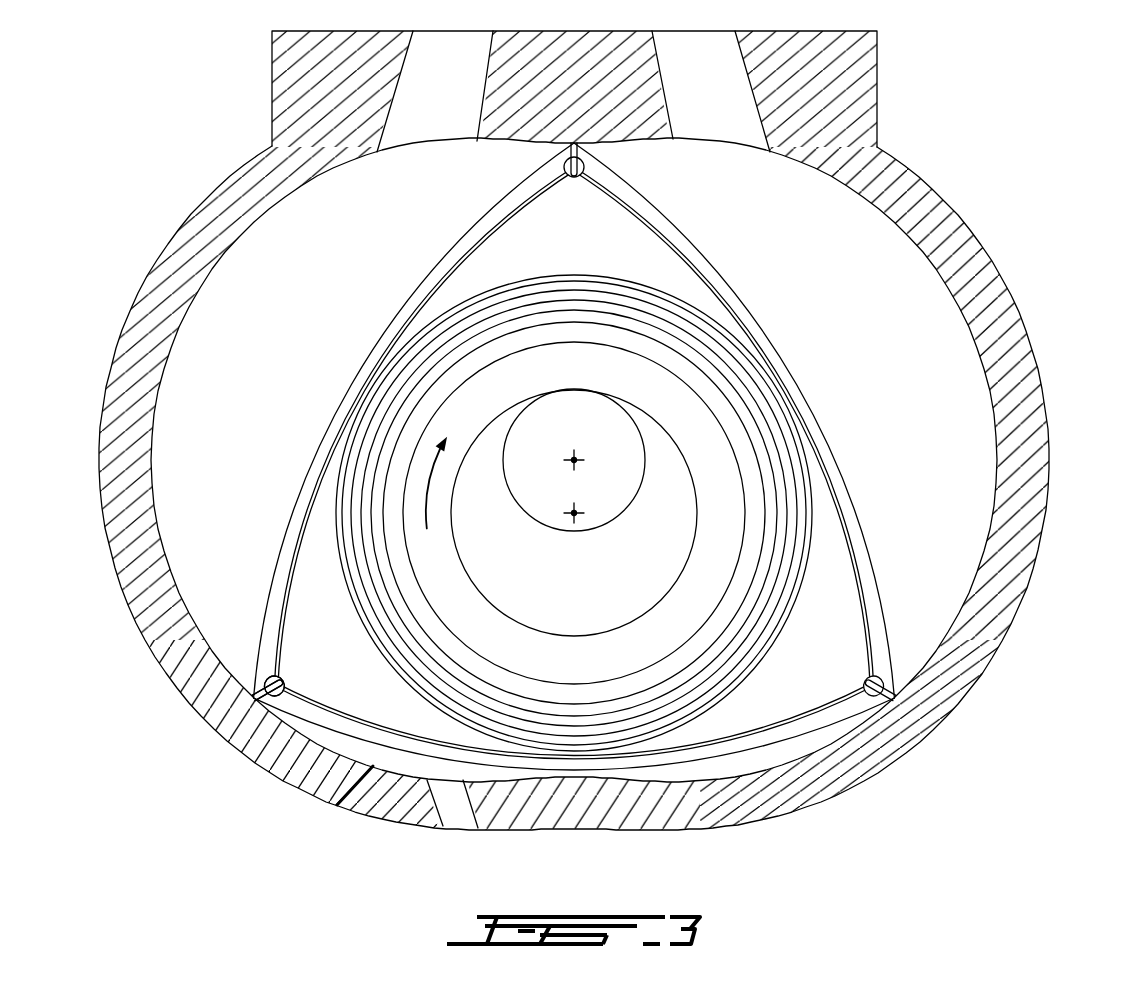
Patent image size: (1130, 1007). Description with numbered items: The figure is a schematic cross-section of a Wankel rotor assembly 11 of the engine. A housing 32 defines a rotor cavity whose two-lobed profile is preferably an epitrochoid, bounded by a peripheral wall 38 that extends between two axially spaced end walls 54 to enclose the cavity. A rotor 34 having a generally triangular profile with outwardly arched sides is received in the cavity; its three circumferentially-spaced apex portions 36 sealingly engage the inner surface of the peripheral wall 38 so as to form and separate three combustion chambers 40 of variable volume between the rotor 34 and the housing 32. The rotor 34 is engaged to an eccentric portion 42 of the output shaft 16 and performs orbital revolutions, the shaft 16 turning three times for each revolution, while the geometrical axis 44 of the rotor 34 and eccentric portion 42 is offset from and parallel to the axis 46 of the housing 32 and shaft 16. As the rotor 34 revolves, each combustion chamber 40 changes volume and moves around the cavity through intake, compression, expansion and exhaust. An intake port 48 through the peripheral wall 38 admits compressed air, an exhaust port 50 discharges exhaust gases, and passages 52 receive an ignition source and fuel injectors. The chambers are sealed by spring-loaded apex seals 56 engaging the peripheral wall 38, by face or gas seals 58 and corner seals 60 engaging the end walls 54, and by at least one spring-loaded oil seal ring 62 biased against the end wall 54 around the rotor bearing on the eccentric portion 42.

The rotor assembly 11 is at (178, 155).
The output shaft 16 is at (602, 496).
The housing 32 is at (958, 203).
The rotor 34 is at (858, 477).
The apex portions 36 is at (906, 713).
The peripheral wall 38 is at (1017, 308).
The combustion chambers 40 is at (241, 368).
The eccentric portion 42 is at (572, 600).
The geometrical axis 44 is at (568, 514).
The axis 46 is at (574, 460).
The intake port 48 is at (710, 110).
The exhaust port 50 is at (438, 110).
The passages 52 is at (452, 807).
The end walls 54 is at (962, 529).
The apex seals 56 is at (260, 697).
The face seals 58 is at (288, 580).
The corner seals 60 is at (266, 681).
The oil seal ring 62 is at (701, 680).